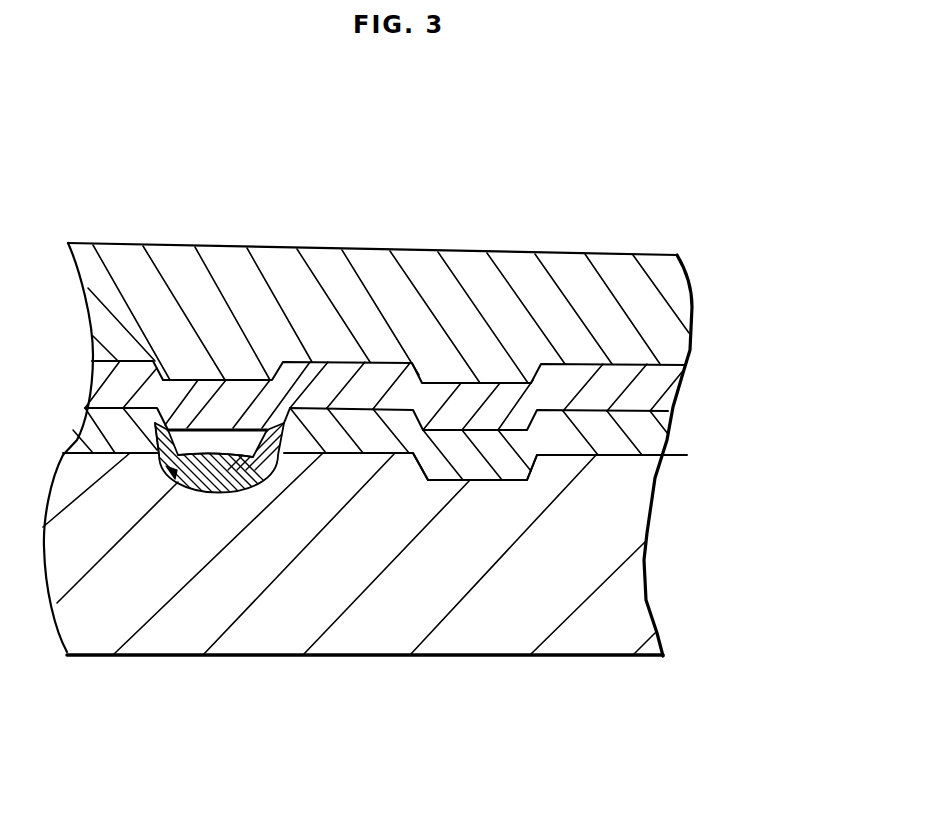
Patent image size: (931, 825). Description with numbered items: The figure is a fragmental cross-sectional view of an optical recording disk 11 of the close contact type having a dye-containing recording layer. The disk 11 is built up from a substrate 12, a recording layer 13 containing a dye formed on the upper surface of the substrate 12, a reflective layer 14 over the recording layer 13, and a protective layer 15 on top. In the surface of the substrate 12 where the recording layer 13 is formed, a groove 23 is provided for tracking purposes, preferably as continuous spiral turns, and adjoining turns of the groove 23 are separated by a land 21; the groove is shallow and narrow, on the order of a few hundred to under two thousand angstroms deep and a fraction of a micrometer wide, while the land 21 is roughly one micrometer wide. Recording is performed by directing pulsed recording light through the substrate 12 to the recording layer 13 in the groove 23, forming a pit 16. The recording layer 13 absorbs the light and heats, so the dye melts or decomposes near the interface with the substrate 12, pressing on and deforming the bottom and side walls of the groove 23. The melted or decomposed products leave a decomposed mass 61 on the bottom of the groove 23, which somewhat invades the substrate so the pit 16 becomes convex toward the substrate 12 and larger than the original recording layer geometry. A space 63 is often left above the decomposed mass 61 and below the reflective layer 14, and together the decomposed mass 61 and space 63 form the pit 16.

The optical recording disk 11 is at (443, 232).
The substrate 12 is at (630, 587).
The recording layer 13 is at (652, 438).
The reflective layer 14 is at (665, 382).
The protective layer 15 is at (683, 318).
The pit 16 is at (273, 467).
The land 21 is at (132, 453).
The groove 23 is at (178, 482).
The decomposed mass 61 is at (220, 480).
The space 63 is at (247, 442).